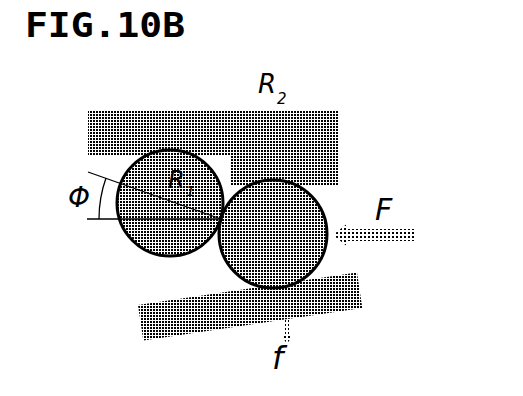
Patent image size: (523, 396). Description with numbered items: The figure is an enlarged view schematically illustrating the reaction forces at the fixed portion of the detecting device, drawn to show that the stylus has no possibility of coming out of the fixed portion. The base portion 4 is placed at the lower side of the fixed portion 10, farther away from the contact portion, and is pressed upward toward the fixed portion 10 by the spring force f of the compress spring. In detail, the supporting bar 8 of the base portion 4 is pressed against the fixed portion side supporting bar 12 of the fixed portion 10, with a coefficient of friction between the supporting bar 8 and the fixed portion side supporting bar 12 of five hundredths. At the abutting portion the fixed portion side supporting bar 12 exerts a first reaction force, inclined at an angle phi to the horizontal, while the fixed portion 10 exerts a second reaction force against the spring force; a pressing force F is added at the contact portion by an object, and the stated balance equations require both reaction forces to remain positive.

The fixed portion 10 is at (128, 135).
The fixed portion side supporting bar 12 is at (165, 236).
The supporting bar 8 is at (282, 220).
The base portion 4 is at (335, 298).